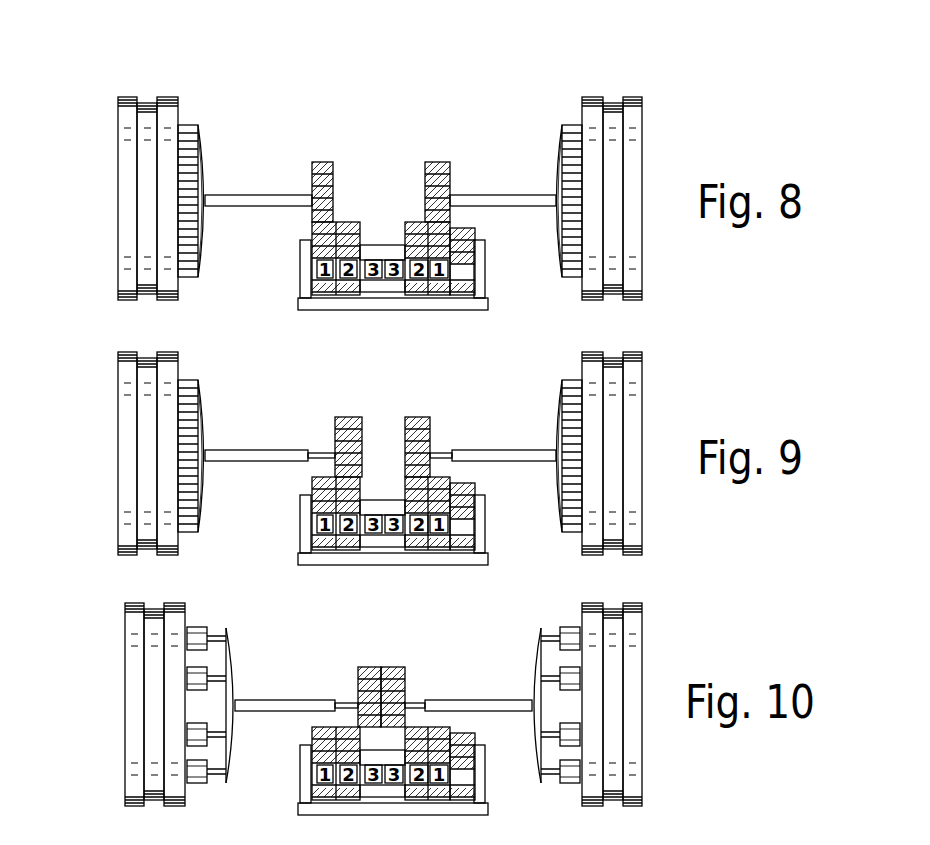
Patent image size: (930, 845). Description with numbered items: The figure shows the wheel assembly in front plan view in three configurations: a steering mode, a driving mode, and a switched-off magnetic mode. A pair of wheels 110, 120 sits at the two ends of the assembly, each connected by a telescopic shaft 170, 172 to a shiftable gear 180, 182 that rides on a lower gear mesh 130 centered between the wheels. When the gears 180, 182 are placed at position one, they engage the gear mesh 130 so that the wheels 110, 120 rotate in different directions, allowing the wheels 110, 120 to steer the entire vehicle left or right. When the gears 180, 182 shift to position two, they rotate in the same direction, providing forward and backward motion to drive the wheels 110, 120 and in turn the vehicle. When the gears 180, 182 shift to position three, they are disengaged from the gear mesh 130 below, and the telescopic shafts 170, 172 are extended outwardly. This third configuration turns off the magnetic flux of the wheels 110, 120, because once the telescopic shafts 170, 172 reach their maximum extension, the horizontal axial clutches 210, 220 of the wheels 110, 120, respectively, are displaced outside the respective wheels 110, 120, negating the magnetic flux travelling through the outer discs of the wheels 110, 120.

In FIG. 8, the wheel 110 is at (669, 97).
In FIG. 9, the wheel 110 is at (669, 352).
In FIG. 10, the wheel 110 is at (658, 612).
In FIG. 8, the wheel 120 is at (113, 88).
In FIG. 9, the wheel 120 is at (113, 343).
In FIG. 10, the wheel 120 is at (113, 598).
In FIG. 8, the gear mesh 130 is at (294, 285).
In FIG. 9, the gear mesh 130 is at (297, 540).
In FIG. 10, the gear mesh 130 is at (294, 792).
In FIG. 8, the telescopic shaft 170 is at (522, 196).
In FIG. 9, the telescopic shaft 170 is at (522, 451).
In FIG. 10, the telescopic shaft 170 is at (522, 701).
In FIG. 8, the telescopic shaft 172 is at (260, 195).
In FIG. 9, the telescopic shaft 172 is at (260, 450).
In FIG. 10, the telescopic shaft 172 is at (295, 700).
In FIG. 8, the gear 180 is at (437, 162).
In FIG. 9, the gear 180 is at (418, 417).
In FIG. 10, the gear 180 is at (390, 667).
In FIG. 8, the gear 182 is at (320, 162).
In FIG. 9, the gear 182 is at (345, 417).
In FIG. 10, the gear 182 is at (368, 667).
In FIG. 10, the horizontal axial clutch 210 is at (545, 620).
In FIG. 10, the horizontal axial clutch 220 is at (216, 627).